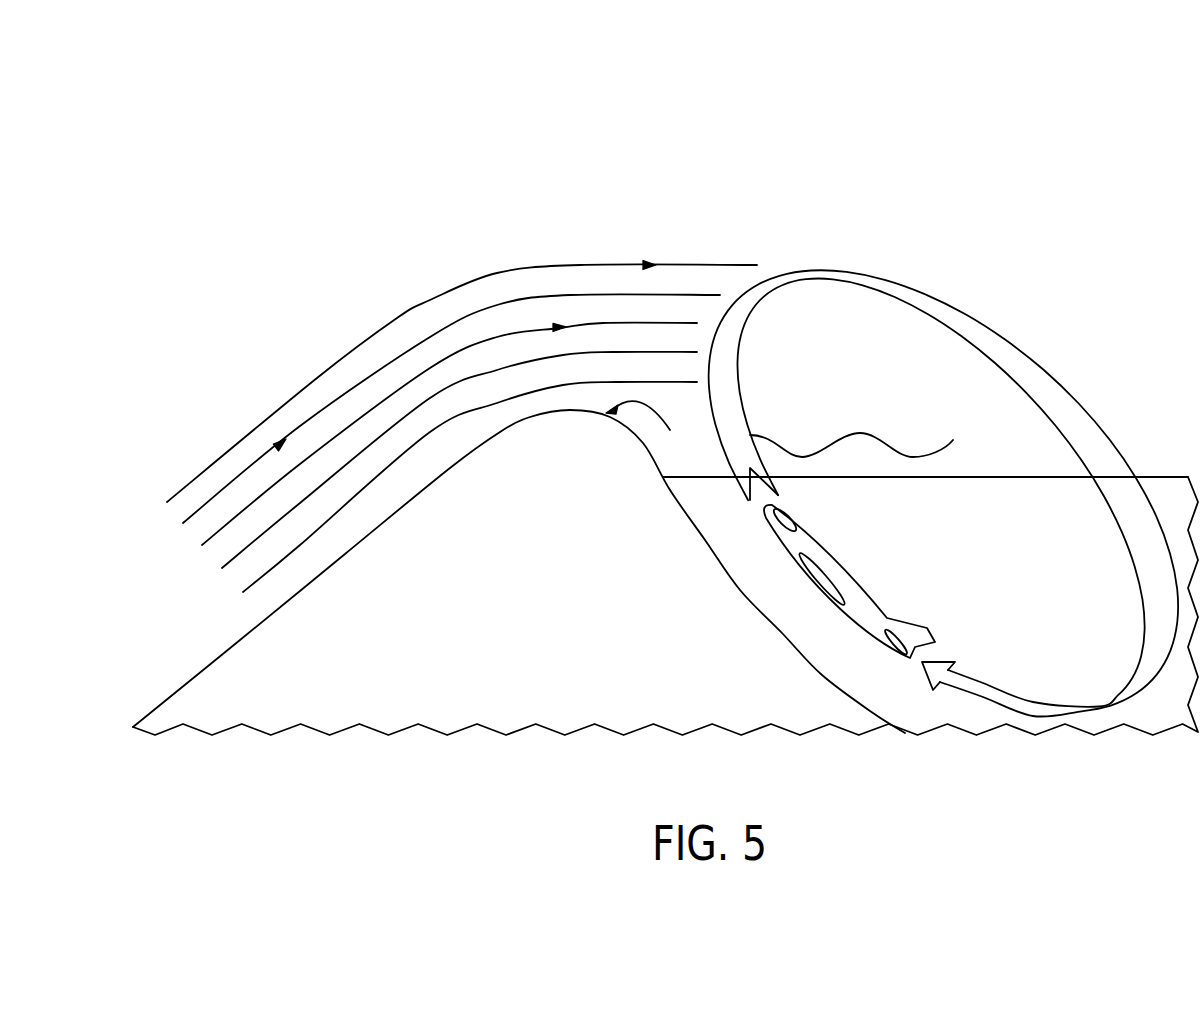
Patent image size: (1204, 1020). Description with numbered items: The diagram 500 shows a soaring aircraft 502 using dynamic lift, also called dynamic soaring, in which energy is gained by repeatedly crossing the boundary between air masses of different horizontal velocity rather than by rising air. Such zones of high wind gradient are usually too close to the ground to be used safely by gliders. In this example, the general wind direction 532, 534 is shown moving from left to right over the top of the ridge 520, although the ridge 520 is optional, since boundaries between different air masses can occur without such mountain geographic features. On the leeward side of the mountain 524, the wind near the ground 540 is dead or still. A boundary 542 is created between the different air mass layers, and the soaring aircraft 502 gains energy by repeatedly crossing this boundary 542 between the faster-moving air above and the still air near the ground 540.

The diagram 500 is at (1123, 187).
The soaring aircraft 502 is at (787, 557).
The ridge 520 is at (450, 461).
The leeward side of the mountain 524 is at (656, 431).
The wind direction 532 is at (437, 302).
The wind direction 534 is at (585, 295).
The wind near the ground 540 is at (815, 643).
The boundary 542 is at (1152, 473).